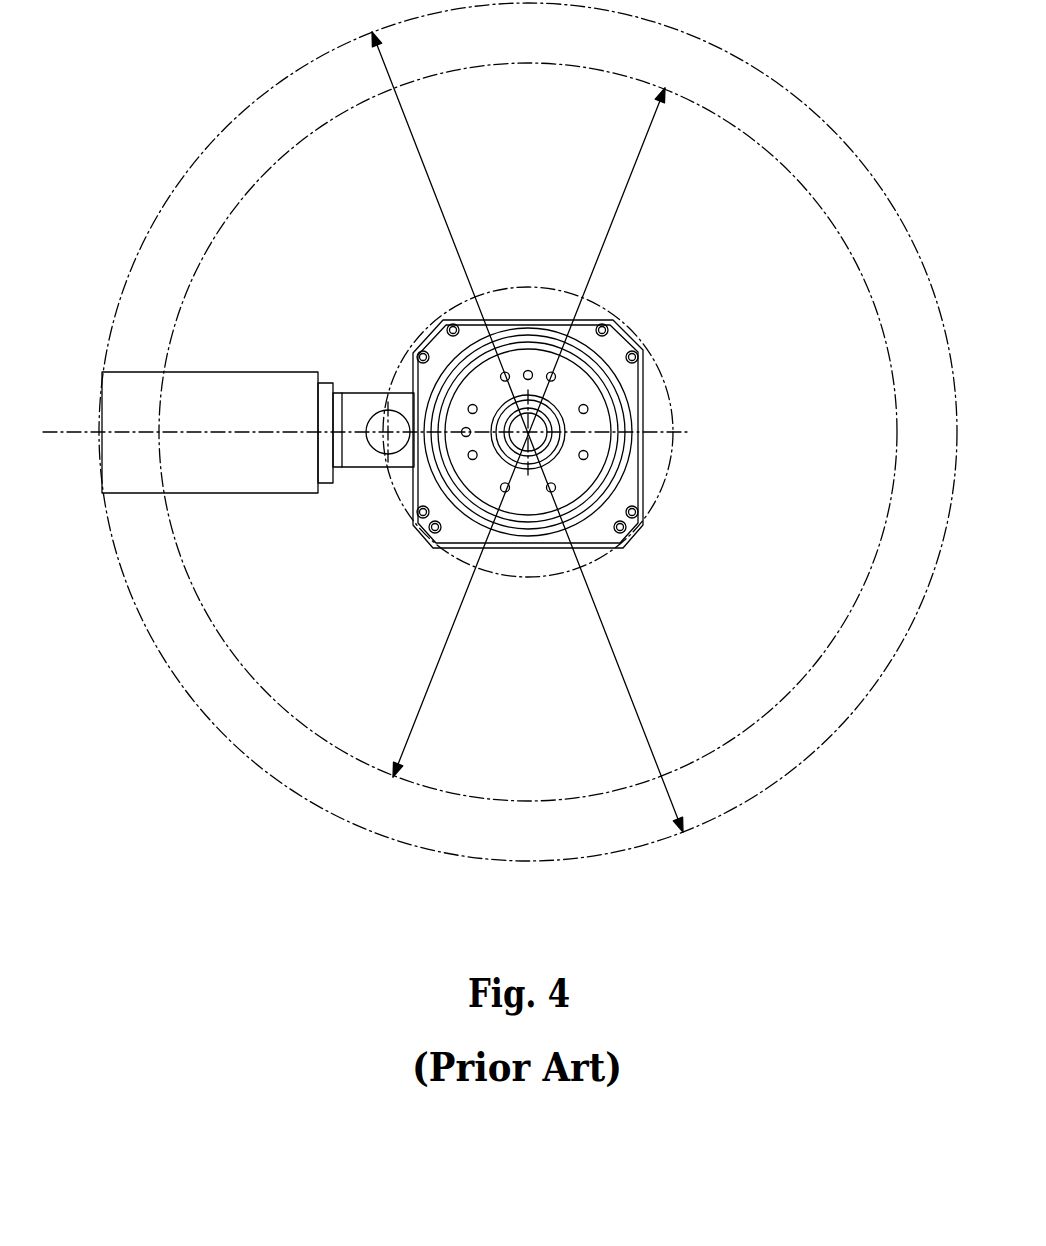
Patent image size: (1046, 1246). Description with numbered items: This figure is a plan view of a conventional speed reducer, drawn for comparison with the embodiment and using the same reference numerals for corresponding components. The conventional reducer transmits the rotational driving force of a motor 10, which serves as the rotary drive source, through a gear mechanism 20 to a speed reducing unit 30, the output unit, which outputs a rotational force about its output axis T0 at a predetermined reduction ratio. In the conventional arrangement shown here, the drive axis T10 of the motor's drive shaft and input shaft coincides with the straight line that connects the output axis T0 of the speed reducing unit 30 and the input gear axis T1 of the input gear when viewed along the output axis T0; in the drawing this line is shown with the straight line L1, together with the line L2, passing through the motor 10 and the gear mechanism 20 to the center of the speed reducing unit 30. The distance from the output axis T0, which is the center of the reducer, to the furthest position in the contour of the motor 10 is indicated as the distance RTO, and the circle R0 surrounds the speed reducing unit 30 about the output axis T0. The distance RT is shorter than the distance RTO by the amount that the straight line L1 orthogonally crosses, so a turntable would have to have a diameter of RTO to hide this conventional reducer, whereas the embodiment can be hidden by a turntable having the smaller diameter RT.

The motor 10 is at (243, 483).
The gear mechanism 20 is at (378, 475).
The speed reducing unit 30 is at (625, 328).
The input gear axis T1 is at (380, 411).
The output axis T0 is at (540, 425).
The rotary table radius circle R0 is at (660, 473).
The distance RT is at (428, 693).
The distance RT0 RTO is at (672, 795).
The drive axis T10 is at (366, 535).
The length L2 is at (366, 535).
The straight line L1 is at (67, 432).